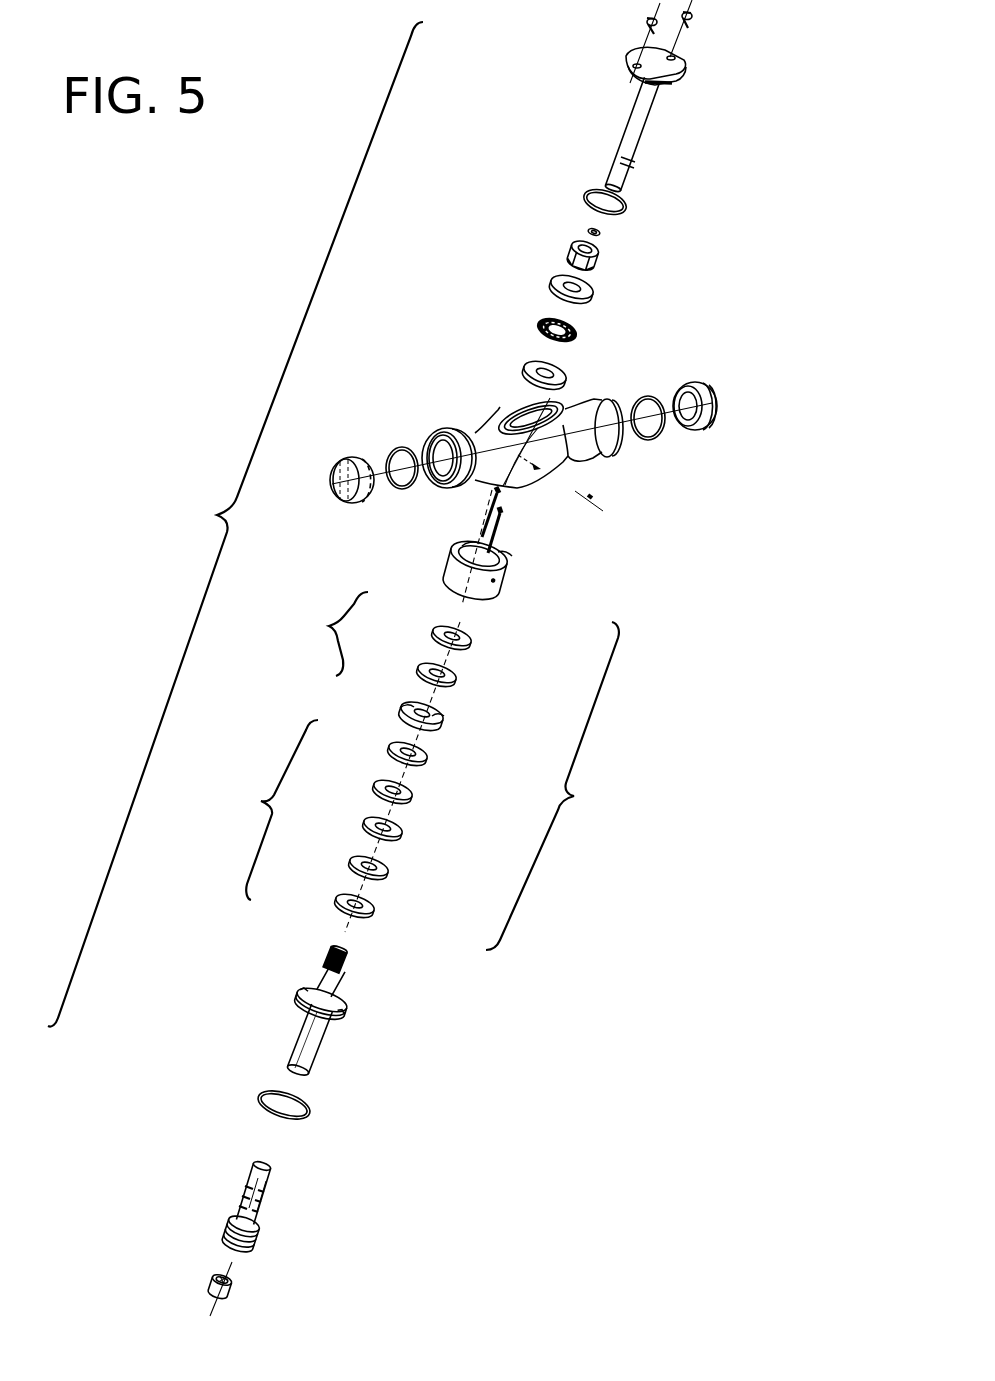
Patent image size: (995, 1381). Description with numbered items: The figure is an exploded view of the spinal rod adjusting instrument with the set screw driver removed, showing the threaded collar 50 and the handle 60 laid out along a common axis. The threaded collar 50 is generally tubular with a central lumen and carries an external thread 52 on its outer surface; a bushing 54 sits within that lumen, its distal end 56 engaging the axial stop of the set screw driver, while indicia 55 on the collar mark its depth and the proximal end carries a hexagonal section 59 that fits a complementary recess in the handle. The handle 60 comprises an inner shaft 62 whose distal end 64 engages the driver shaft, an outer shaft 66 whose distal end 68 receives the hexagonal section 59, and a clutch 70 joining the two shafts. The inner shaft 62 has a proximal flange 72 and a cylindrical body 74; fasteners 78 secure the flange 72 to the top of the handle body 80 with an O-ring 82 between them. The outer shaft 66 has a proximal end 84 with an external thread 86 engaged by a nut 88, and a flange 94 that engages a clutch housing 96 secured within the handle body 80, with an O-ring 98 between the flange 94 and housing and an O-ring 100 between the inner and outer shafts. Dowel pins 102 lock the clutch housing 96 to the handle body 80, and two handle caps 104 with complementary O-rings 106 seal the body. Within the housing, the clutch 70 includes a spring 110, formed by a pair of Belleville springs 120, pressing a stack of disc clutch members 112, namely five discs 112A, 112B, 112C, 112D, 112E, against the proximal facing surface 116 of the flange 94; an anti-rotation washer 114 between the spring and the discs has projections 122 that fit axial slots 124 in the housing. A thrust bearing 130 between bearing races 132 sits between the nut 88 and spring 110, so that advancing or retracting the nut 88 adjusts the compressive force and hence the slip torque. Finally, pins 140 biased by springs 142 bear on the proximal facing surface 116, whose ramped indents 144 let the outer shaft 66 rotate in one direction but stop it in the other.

The threaded collar 50 is at (314, 1213).
The threaded portion 52 is at (258, 1240).
The bushing 54 is at (236, 1291).
The indicia 55 is at (216, 1193).
The distal end of bushing 56 is at (210, 1296).
The hexagonal section 59 is at (272, 1170).
The handle 60 is at (235, 524).
The inner shaft 62 is at (672, 118).
The distal end of inner shaft 64 is at (646, 183).
The outer shaft 66 is at (360, 1043).
The distal end of outer shaft 68 is at (334, 1085).
The clutch 70 is at (552, 786).
The proximal flange 72 is at (688, 62).
The cylindrical body 74 is at (634, 114).
The fasteners 78 is at (646, 23).
The handle body 80 is at (598, 452).
The O-ring 82 is at (618, 212).
The proximal end of outer shaft 84 is at (382, 966).
The external thread 86 is at (326, 960).
The nut 88 is at (600, 265).
The flange 94 is at (300, 1010).
The clutch housing 96 is at (505, 587).
The O-ring 98 is at (302, 1118).
The O-ring 100 is at (589, 230).
The dowel pins 102 is at (430, 400).
The handle caps 104 is at (342, 500).
The O-rings 106 is at (396, 450).
The spring 110 is at (328, 634).
The disc clutch members 112 is at (262, 810).
The disc clutch member 112A is at (428, 758).
The disc clutch member 112B is at (414, 794).
The disc clutch member 112C is at (404, 828).
The disc clutch member 112D is at (390, 866).
The disc clutch member 112E is at (376, 908).
The anti-rotation washer 114 is at (442, 722).
The proximal facing surface 116 is at (346, 992).
The Belleville springs 120 is at (474, 640).
The projections 122 is at (438, 706).
The axial slots 124 is at (460, 550).
The thrust bearing 130 is at (578, 333).
The bearing races 132 is at (592, 298).
The pins 140 is at (486, 530).
The springs 142 is at (508, 540).
The ramped indents 144 is at (300, 996).